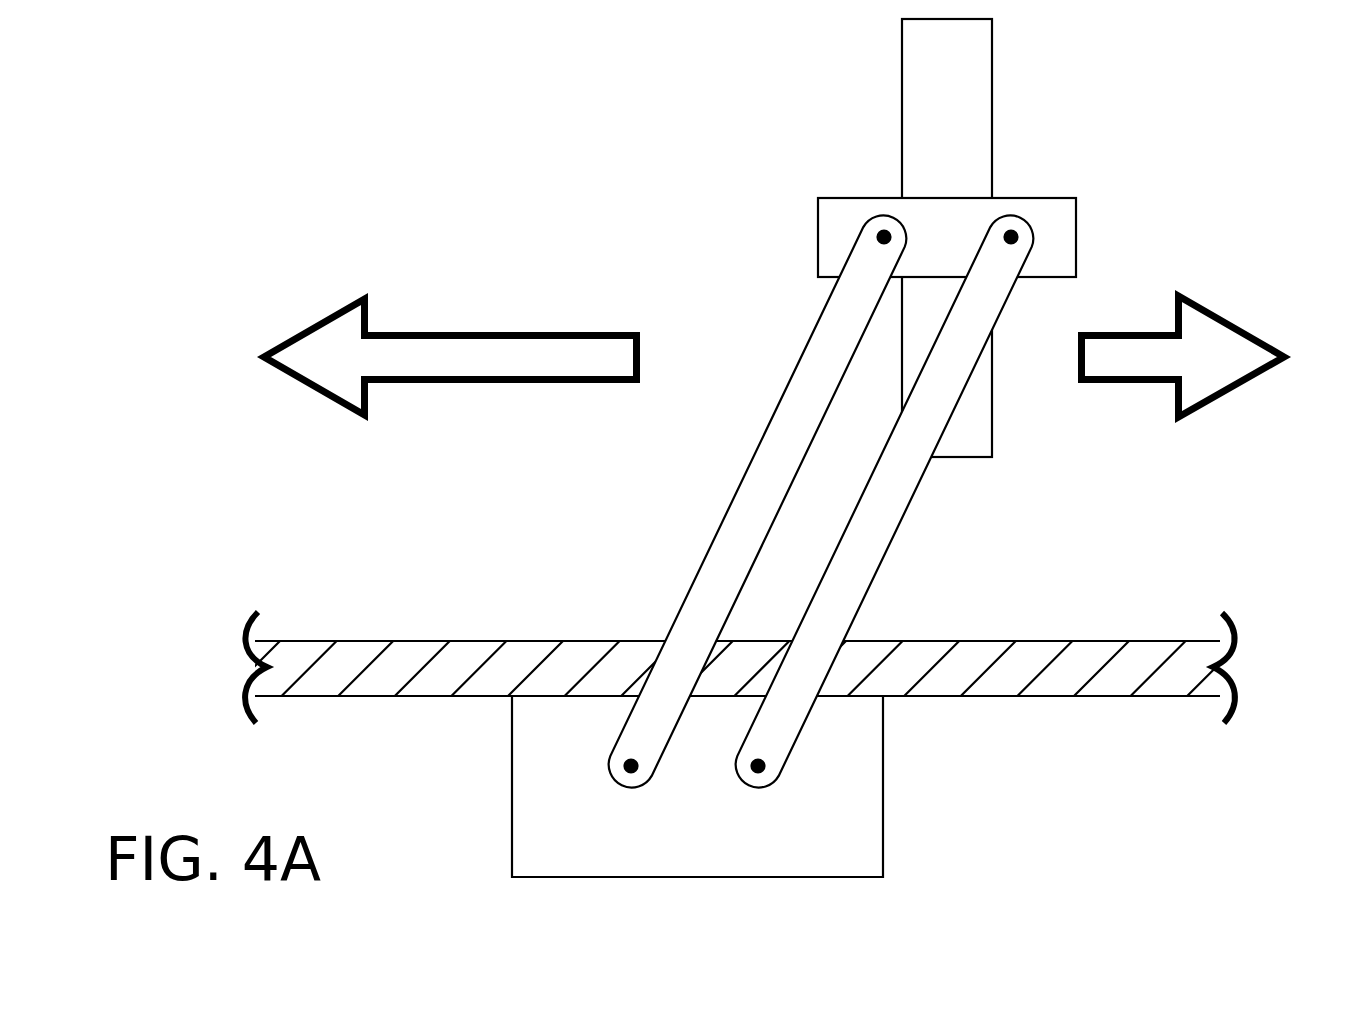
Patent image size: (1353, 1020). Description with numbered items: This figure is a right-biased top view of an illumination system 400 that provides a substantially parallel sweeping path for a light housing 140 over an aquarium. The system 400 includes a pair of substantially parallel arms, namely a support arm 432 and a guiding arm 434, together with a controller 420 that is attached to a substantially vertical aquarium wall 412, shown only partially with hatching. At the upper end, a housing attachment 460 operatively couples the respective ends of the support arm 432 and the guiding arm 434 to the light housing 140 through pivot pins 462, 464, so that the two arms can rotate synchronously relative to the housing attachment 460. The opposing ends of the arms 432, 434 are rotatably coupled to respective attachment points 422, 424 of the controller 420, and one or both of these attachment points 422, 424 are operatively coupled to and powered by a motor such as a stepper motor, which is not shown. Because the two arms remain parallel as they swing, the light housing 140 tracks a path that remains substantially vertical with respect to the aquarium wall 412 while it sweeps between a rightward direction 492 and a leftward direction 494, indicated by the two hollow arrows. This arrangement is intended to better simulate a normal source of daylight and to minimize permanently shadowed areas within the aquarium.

The illumination system 400 is at (262, 172).
The light housing 140 is at (993, 134).
The housing attachment 460 is at (1077, 237).
The pivot pin 462 is at (1012, 232).
The pivot pin 464 is at (884, 232).
The guiding arm 434 is at (787, 388).
The support arm 432 is at (906, 508).
The aquarium wall 412 is at (437, 641).
The controller 420 is at (883, 844).
The attachment point 422 is at (762, 763).
The attachment point 424 is at (627, 762).
The rightward direction 492 is at (1197, 405).
The leftward direction 494 is at (483, 332).